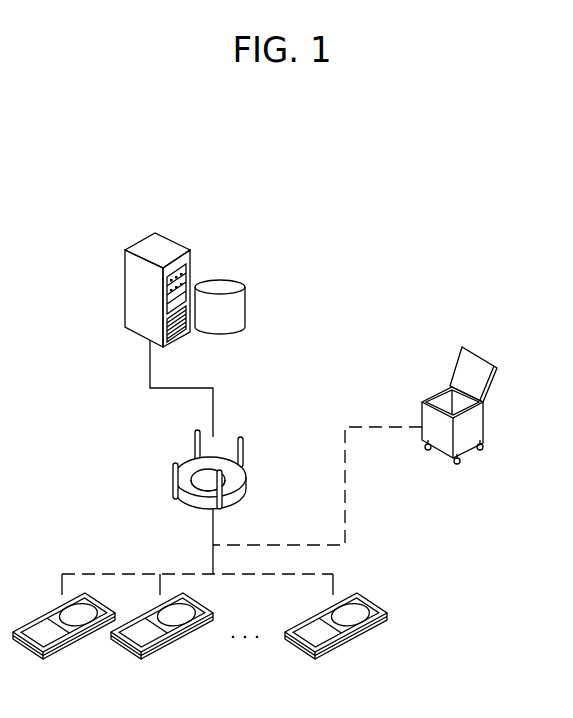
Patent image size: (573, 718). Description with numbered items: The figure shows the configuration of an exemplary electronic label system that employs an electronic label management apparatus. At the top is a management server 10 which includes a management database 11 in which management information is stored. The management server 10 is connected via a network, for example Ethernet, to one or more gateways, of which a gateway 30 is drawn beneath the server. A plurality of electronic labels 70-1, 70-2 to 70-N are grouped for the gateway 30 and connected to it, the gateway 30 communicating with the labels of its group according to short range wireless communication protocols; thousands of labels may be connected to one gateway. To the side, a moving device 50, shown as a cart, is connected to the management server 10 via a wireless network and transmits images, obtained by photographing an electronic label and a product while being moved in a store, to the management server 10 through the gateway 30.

The management server 10 is at (172, 249).
The management database 11 is at (223, 282).
The gateway 30 is at (246, 476).
The moving device 50 is at (482, 355).
The electronic label 70-1 is at (66, 646).
The electronic label 70-2 is at (164, 646).
The electronic label 70-N is at (340, 646).